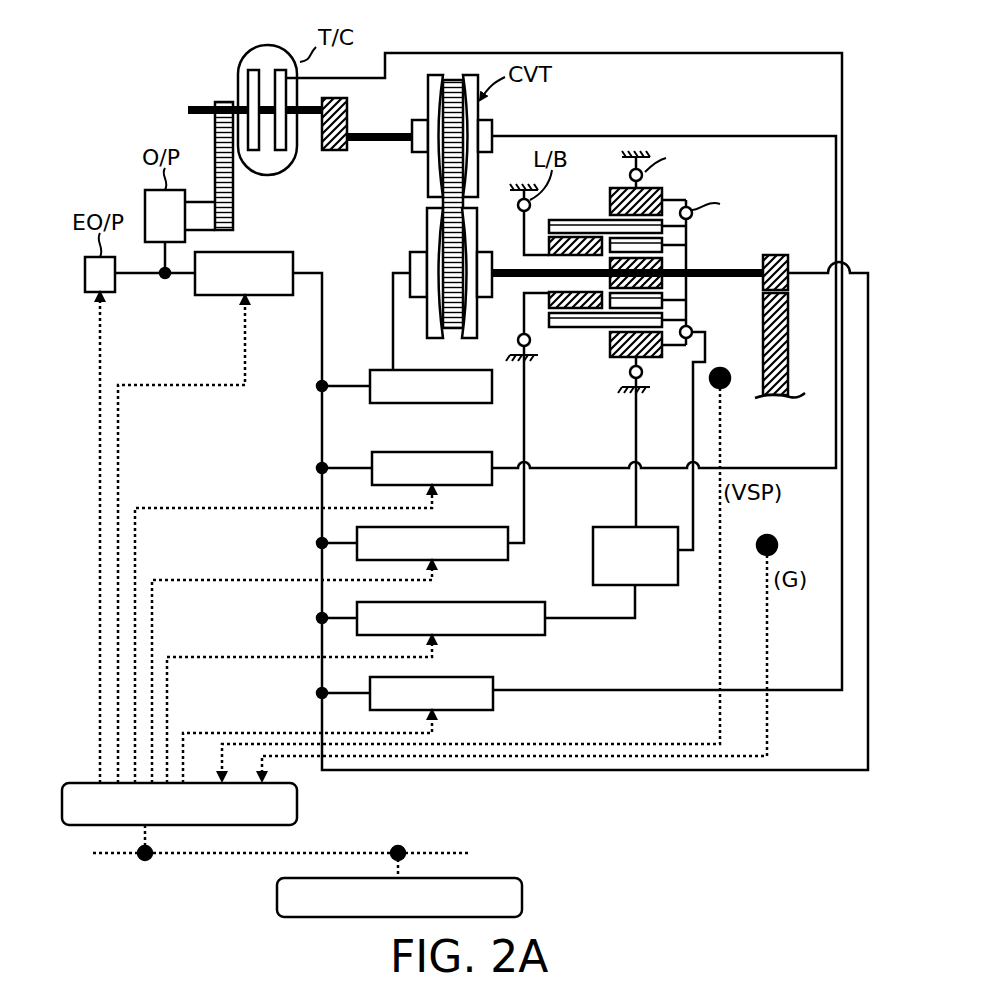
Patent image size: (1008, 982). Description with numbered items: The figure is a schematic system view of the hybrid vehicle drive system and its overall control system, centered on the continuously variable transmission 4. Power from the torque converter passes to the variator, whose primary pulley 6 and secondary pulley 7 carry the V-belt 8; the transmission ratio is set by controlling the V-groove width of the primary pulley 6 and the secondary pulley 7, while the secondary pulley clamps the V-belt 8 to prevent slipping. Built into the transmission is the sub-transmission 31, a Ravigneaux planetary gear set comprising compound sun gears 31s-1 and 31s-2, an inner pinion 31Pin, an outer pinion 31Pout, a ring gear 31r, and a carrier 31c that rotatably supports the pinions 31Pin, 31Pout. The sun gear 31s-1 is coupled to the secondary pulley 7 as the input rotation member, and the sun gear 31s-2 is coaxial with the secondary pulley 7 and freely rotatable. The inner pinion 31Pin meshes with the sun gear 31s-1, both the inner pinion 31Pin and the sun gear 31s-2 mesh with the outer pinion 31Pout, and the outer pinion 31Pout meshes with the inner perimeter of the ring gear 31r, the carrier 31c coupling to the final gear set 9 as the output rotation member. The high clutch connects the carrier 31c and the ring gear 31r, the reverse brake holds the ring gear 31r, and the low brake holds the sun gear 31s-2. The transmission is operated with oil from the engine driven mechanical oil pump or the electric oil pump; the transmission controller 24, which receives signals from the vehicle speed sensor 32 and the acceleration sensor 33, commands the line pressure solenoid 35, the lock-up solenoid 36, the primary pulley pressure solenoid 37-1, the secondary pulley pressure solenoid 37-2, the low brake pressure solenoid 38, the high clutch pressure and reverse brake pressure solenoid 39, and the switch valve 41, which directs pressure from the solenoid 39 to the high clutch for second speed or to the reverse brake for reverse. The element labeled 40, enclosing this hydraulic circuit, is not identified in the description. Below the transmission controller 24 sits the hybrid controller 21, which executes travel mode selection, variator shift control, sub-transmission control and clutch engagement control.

The continuously variable transmission 4 is at (762, 36).
The primary pulley 6 is at (480, 115).
The secondary pulley 7 is at (410, 262).
The V-belt 8 is at (443, 200).
The final gear set 9 is at (790, 290).
The hybrid controller 21 is at (277, 893).
The transmission controller 24 is at (297, 805).
The sub-transmission 31 is at (612, 346).
The ring gear 31r is at (664, 195).
The inner pinion 31Pin is at (668, 242).
The sun gear 31s-1 is at (668, 262).
The carrier 31c is at (686, 290).
The sun gear 31s-2 is at (549, 300).
The outer pinion 31Pout is at (555, 327).
The vehicle speed sensor 32 is at (728, 372).
The acceleration sensor 33 is at (776, 538).
The line pressure solenoid 35 is at (255, 252).
The lock-up solenoid 36 is at (480, 677).
The primary pulley pressure solenoid 37-1 is at (425, 452).
The secondary pulley pressure solenoid 37-2 is at (382, 370).
The low brake pressure solenoid 38 is at (470, 527).
The high clutch pressure and reverse brake pressure solenoid 39 is at (535, 602).
The hydraulic control valve unit 40 is at (815, 770).
The switch valve 41 is at (600, 527).